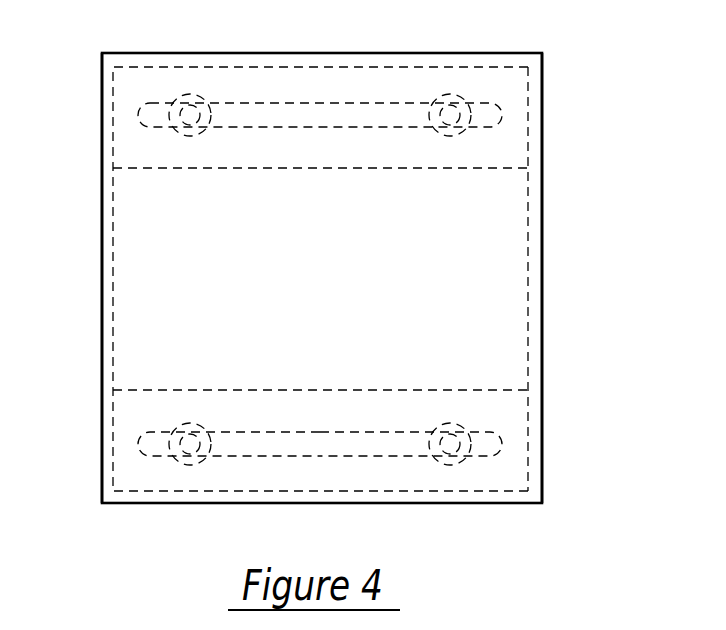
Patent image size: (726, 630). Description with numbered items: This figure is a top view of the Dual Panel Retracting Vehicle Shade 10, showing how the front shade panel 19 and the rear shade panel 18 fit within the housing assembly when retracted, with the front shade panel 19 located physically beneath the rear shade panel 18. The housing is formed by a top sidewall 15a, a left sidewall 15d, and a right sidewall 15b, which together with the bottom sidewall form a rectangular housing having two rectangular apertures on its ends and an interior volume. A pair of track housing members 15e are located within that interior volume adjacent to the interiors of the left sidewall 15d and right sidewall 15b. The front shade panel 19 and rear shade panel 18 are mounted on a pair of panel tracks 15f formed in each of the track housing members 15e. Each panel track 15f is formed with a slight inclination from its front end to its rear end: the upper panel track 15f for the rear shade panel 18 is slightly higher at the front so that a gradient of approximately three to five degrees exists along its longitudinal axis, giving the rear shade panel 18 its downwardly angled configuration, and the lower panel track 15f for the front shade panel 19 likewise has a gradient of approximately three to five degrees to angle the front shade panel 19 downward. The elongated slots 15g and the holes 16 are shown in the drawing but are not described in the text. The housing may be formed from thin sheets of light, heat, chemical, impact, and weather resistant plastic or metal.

The mounting plate assembly 10 is at (378, 253).
The top sidewall 15a is at (522, 338).
The right sidewall 15b is at (100, 311).
The left sidewall 15d is at (542, 385).
The track housing member 15e is at (543, 152).
The panel track 15f is at (105, 192).
The elongated slot 15g is at (292, 103).
The fastener hole 16 is at (447, 104).
The rear shade panel 18 is at (505, 288).
The front shade panel 19 is at (513, 427).